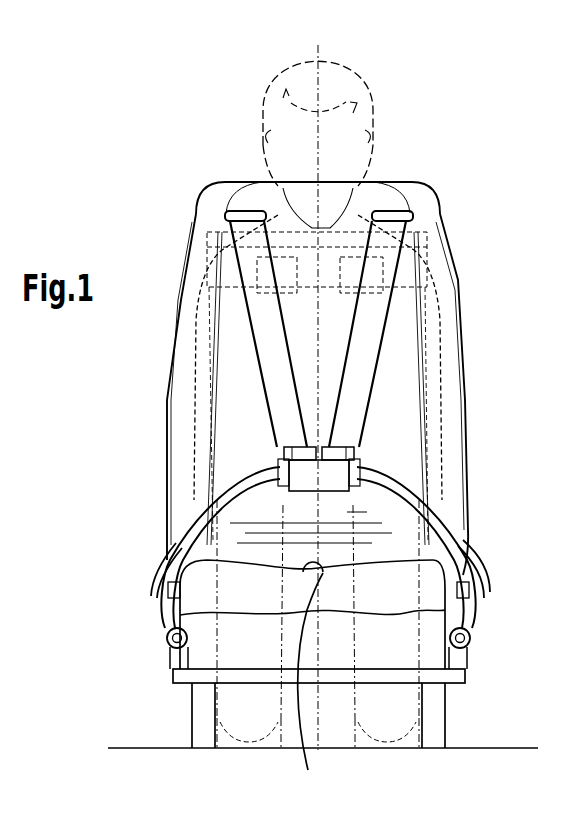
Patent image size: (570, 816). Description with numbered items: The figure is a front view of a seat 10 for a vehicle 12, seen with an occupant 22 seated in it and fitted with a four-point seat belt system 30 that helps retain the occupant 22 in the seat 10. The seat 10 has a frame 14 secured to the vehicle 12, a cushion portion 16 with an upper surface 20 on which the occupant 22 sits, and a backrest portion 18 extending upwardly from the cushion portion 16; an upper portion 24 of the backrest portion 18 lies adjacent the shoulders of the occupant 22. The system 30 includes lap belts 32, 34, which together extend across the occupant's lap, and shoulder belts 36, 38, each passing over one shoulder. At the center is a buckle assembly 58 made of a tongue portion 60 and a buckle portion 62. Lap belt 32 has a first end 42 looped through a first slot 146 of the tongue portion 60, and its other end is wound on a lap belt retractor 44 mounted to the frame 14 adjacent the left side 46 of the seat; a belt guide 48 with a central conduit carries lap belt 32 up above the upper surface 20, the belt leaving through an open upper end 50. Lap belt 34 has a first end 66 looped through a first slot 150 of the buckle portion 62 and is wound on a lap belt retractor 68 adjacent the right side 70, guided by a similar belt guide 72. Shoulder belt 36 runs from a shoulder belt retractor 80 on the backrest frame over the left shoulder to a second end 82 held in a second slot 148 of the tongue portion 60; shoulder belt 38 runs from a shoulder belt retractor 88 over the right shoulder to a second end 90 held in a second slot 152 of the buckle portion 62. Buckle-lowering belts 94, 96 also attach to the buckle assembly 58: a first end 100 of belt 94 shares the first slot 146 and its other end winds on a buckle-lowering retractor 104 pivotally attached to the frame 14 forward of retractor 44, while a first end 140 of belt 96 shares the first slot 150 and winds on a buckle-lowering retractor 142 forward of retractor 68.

The seat 10 is at (473, 167).
The vehicle 12 is at (125, 748).
The frame 14 is at (443, 392).
The cushion portion 16 is at (224, 651).
The backrest portion 18 is at (460, 213).
The upper surface 20 is at (310, 672).
The vehicle occupant 22 is at (362, 60).
The upper portion 24 is at (206, 200).
The four-point seat belt system 30 is at (160, 257).
The lap belt 32 is at (362, 481).
The lap belt 34 is at (279, 480).
The shoulder belt 36 is at (378, 306).
The shoulder belt 38 is at (280, 338).
The first end 42 is at (360, 472).
The lap belt retractor 44 is at (480, 651).
The left side 46 is at (440, 236).
The belt guide 48 is at (502, 562).
The open upper end 50 is at (470, 528).
The buckle assembly 58 is at (336, 504).
The tongue portion 60 is at (358, 455).
The buckle portion 62 is at (281, 452).
The first end 66 is at (280, 465).
The lap belt retractor 68 is at (152, 641).
The right side 70 is at (192, 233).
The belt guide 72 is at (141, 557).
The shoulder belt retractor 80 is at (359, 259).
The second end 82 is at (323, 445).
The shoulder belt retractor 88 is at (277, 259).
The second end 90 is at (313, 445).
The buckle-lowering belt 94 is at (430, 512).
The buckle-lowering belt 96 is at (205, 508).
The first end 100 is at (360, 480).
The buckle-lowering retractor 104 is at (469, 592).
The first end 140 is at (279, 472).
The buckle-lowering retractor 142 is at (168, 592).
The first slot 146 is at (360, 463).
The second slot 148 is at (366, 440).
The first slot 150 is at (281, 458).
The second slot 152 is at (266, 437).